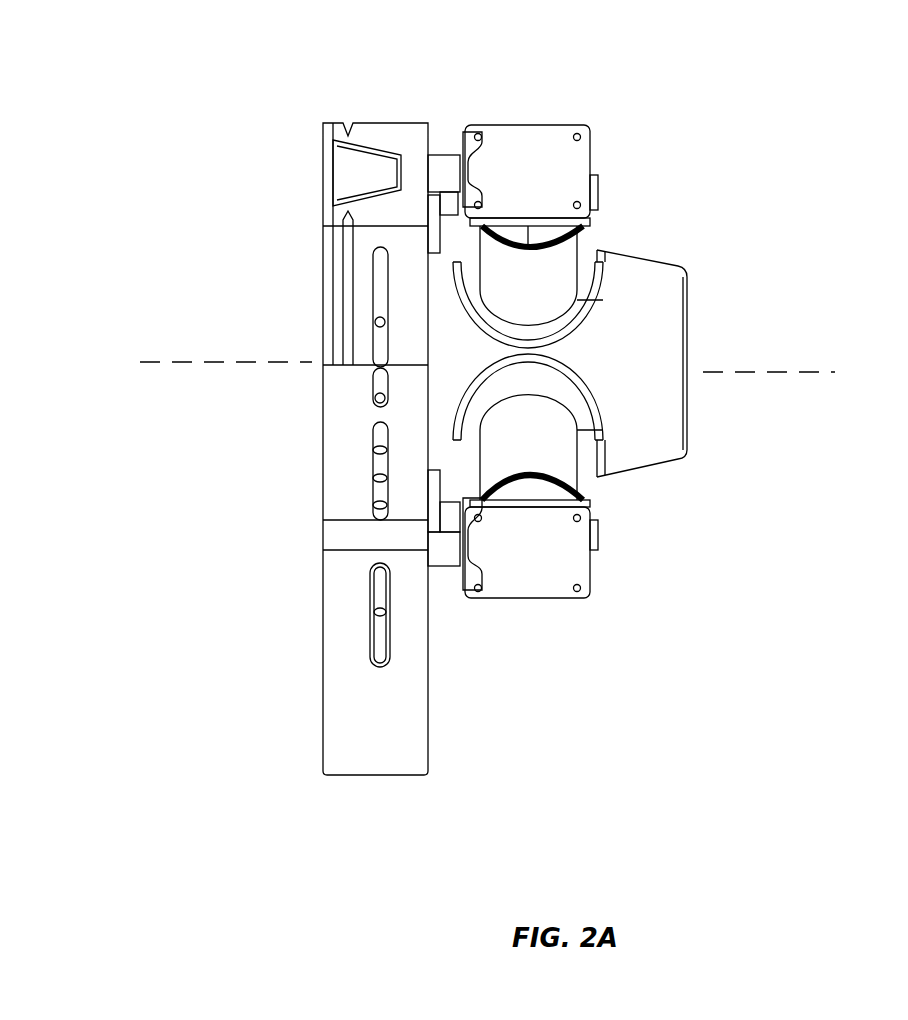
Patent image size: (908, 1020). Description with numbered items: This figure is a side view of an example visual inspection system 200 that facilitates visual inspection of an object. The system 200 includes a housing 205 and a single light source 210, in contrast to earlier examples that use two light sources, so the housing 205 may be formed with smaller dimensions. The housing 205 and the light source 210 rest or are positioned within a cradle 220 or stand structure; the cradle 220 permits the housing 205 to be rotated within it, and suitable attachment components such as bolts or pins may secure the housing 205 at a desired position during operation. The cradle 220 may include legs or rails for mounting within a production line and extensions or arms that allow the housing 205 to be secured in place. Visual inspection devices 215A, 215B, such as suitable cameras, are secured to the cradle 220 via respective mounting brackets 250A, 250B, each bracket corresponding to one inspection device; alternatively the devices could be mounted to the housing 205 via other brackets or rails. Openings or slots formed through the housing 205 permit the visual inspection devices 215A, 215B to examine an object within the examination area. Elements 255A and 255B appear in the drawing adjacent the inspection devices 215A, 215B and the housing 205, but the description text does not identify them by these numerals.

The system 200 is at (160, 66).
The housing 205 is at (636, 279).
The light source 210 is at (378, 213).
The visual inspection device 215A is at (557, 269).
The visual inspection device 215B is at (558, 470).
The cradle 220 is at (345, 717).
The mounting bracket 250A is at (456, 158).
The mounting bracket 250B is at (447, 556).
The first lens barrel ring 255A is at (588, 303).
The second lens barrel ring 255B is at (566, 420).